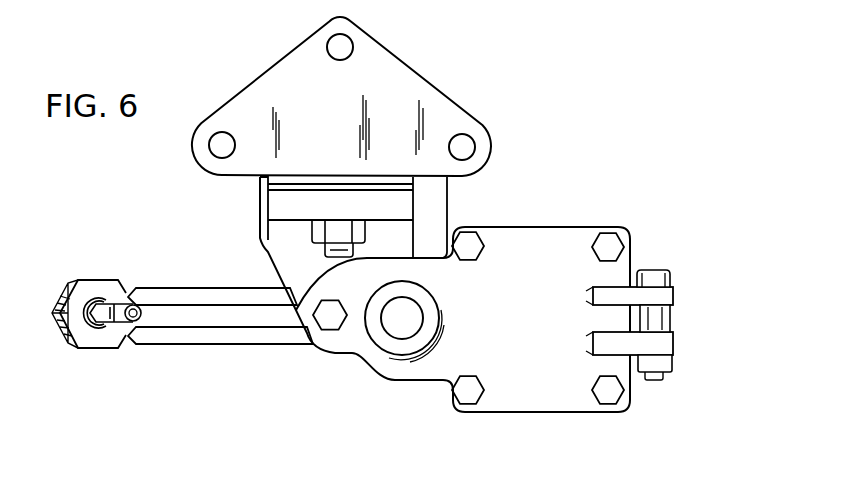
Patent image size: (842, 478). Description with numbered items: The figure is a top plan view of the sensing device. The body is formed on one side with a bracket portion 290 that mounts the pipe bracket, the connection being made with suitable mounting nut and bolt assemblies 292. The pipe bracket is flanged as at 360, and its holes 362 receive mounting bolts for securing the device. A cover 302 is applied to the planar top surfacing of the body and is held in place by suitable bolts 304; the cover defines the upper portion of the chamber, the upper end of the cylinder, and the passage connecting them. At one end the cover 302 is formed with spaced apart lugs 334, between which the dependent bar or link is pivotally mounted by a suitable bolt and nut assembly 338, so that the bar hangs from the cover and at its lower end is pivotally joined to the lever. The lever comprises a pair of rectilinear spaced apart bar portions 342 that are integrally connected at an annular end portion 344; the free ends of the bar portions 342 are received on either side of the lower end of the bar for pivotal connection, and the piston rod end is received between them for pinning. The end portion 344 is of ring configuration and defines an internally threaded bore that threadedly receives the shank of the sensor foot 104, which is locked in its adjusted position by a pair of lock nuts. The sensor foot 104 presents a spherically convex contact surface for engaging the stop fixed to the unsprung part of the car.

The sensor foot 104 is at (63, 286).
The bracket portion 290 is at (401, 203).
The mounting nut and bolt assemblies 292 is at (298, 232).
The cover 302 is at (568, 250).
The bolts 304 is at (470, 248).
The spaced apart lugs 334 is at (665, 297).
The bolt and nut assembly 338 is at (670, 265).
The bar portions 342 is at (206, 292).
The annular end portion 344 is at (78, 345).
The flange 360 is at (440, 113).
The holes 362 is at (349, 46).